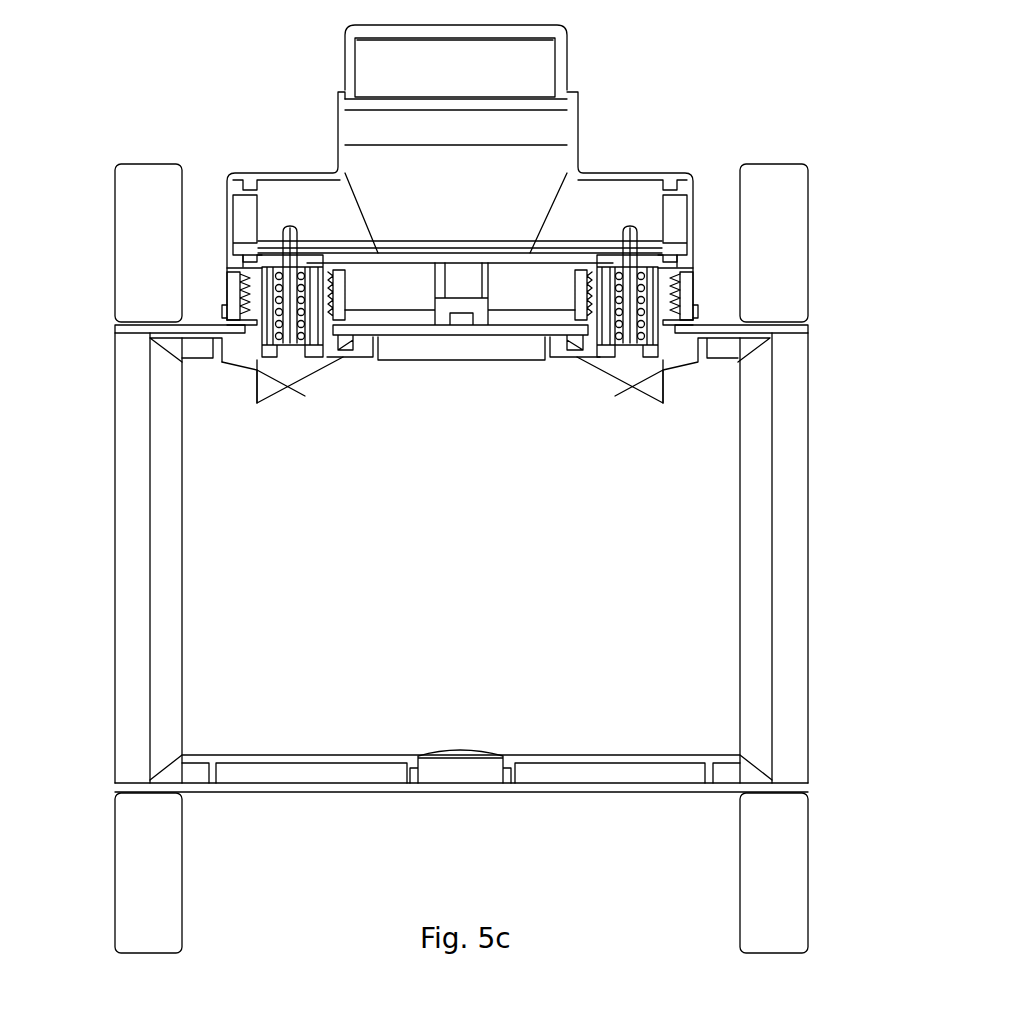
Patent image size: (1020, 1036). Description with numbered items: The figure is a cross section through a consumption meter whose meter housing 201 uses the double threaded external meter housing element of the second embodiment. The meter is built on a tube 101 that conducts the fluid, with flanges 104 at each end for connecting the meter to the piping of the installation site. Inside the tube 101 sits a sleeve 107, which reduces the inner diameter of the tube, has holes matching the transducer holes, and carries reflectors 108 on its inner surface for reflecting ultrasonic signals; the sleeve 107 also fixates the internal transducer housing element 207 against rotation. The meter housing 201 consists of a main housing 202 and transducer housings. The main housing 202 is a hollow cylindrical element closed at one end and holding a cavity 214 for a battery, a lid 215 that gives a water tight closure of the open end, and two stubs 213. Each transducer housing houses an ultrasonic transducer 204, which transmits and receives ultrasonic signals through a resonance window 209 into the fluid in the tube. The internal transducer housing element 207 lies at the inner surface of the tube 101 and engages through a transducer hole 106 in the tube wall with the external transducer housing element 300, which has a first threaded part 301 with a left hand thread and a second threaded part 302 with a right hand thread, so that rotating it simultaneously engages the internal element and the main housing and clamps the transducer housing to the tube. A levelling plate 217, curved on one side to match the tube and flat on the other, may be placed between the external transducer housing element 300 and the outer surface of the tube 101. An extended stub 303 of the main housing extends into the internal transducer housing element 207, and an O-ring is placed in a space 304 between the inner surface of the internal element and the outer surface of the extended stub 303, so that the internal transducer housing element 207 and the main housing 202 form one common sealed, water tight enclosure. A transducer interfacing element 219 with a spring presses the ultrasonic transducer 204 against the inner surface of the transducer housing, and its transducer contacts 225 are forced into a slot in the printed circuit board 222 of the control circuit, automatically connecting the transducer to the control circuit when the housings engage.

The tube 101 is at (312, 787).
The flanges 104 is at (773, 855).
The transducer hole 106 is at (693, 313).
The sleeve 107 is at (468, 353).
The reflectors 108 is at (457, 752).
The meter housing 201 is at (592, 113).
The main housing 202 is at (295, 177).
The ultrasonic transducer 204 is at (258, 383).
The internal transducer housing element 207 is at (245, 348).
The resonance window 209 is at (258, 392).
The stubs 213 is at (693, 262).
The cavity 214 is at (420, 177).
The lid 215 is at (233, 187).
The levelling plate 217 is at (230, 322).
The transducer interfacing element 219 is at (655, 352).
The printed circuit board 222 is at (586, 240).
The transducer contacts 225 is at (637, 226).
The external transducer housing element 300 is at (233, 295).
The first threaded part 301 is at (683, 283).
The second threaded part 302 is at (697, 314).
The extended stub 303 is at (691, 293).
The space 304 is at (699, 307).